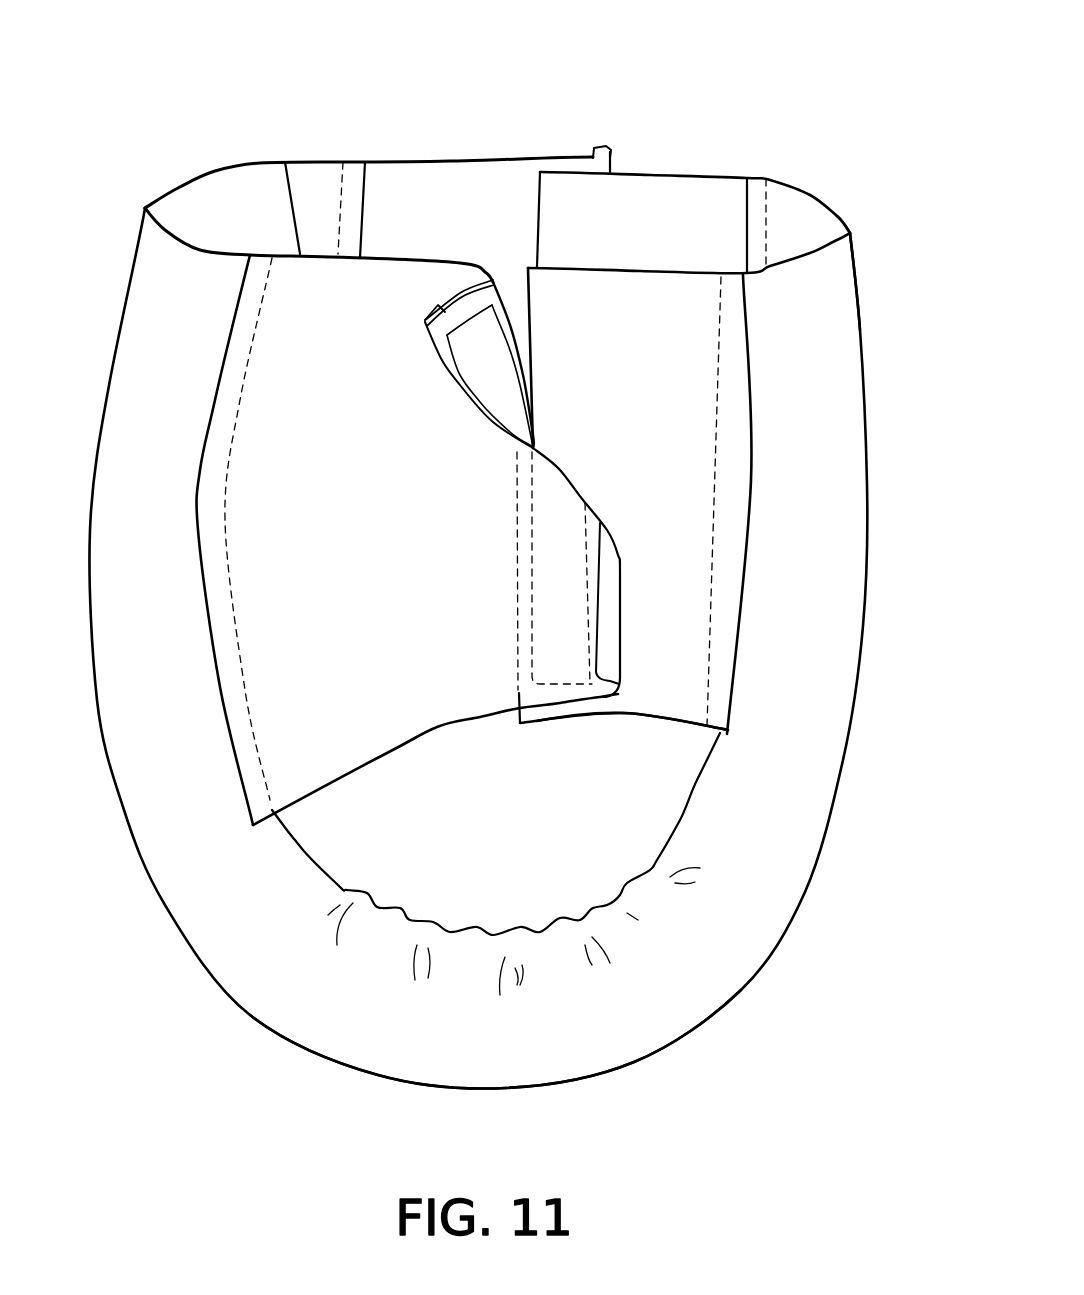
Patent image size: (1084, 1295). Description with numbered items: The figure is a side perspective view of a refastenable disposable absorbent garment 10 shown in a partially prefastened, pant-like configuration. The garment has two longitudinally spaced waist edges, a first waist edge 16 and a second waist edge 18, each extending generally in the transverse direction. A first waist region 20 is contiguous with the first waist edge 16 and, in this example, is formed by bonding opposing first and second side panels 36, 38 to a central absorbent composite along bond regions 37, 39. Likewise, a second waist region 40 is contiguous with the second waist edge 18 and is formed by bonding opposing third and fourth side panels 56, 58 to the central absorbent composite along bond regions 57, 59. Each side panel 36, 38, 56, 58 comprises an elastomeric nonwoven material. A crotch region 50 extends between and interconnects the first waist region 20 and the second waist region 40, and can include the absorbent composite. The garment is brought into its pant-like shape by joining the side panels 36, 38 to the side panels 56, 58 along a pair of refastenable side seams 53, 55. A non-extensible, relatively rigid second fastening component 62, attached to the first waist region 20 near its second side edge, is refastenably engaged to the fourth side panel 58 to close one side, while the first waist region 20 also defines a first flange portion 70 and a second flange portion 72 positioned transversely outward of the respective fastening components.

The refastenable disposable absorbent garment 10 is at (802, 74).
The first waist edge 16 is at (195, 237).
The second waist edge 18 is at (838, 204).
The first waist region 20 is at (285, 162).
The first side panel 36 is at (450, 161).
The bond region 37 is at (353, 208).
The second side panel 38 is at (388, 760).
The bond region 39 is at (200, 516).
The second waist region 40 is at (657, 270).
The crotch region 50 is at (528, 1056).
The refastenable side seam 53 is at (582, 152).
The refastenable side seam 55 is at (574, 733).
The third side panel 56 is at (692, 171).
The bond region 57 is at (758, 223).
The fourth side panel 58 is at (668, 728).
The bond region 59 is at (737, 488).
The second fastening component 62 is at (475, 390).
The first flange portion 70 is at (603, 146).
The second flange portion 72 is at (436, 306).